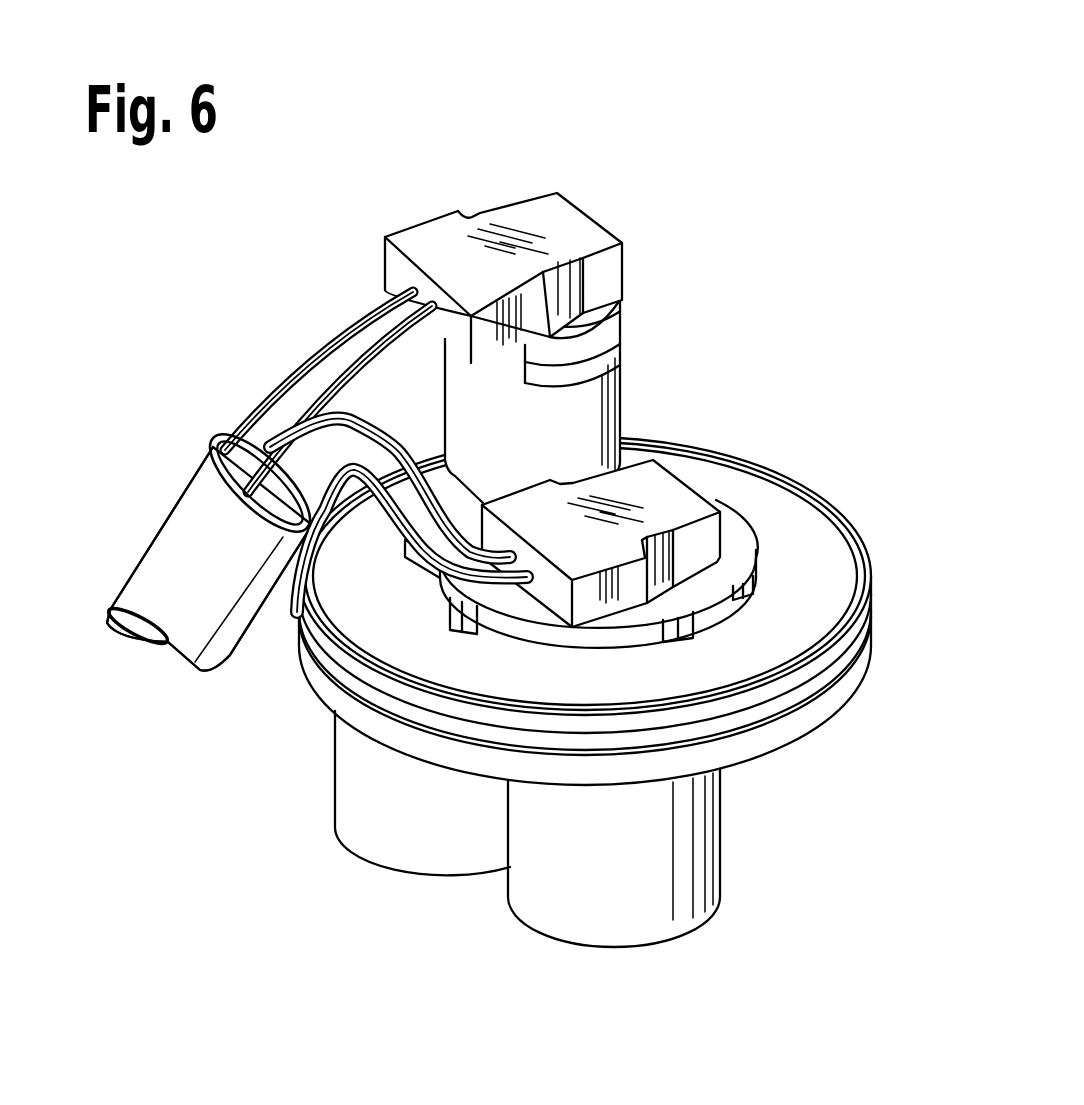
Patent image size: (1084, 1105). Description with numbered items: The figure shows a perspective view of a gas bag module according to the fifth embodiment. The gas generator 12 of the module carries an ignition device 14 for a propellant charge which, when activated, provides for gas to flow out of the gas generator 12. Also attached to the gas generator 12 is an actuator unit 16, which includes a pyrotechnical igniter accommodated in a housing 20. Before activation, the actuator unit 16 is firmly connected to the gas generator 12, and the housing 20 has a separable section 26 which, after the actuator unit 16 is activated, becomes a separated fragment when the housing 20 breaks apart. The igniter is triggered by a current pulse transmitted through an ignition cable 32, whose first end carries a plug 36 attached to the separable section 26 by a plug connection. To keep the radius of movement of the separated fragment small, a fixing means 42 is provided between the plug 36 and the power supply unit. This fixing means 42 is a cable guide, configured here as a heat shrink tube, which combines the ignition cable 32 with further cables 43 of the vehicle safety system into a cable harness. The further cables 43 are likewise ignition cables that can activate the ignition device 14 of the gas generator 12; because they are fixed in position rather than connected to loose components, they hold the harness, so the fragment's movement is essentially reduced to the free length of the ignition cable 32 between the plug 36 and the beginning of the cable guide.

The gas generator 12 is at (790, 530).
The ignition device 14 is at (653, 487).
The actuator unit 16 is at (547, 307).
The housing 20 is at (615, 373).
The separable section 26 is at (583, 409).
The ignition cable 32 is at (327, 387).
The plug 36 is at (428, 240).
The fixing means 42 is at (203, 527).
The further cables 43 is at (353, 458).